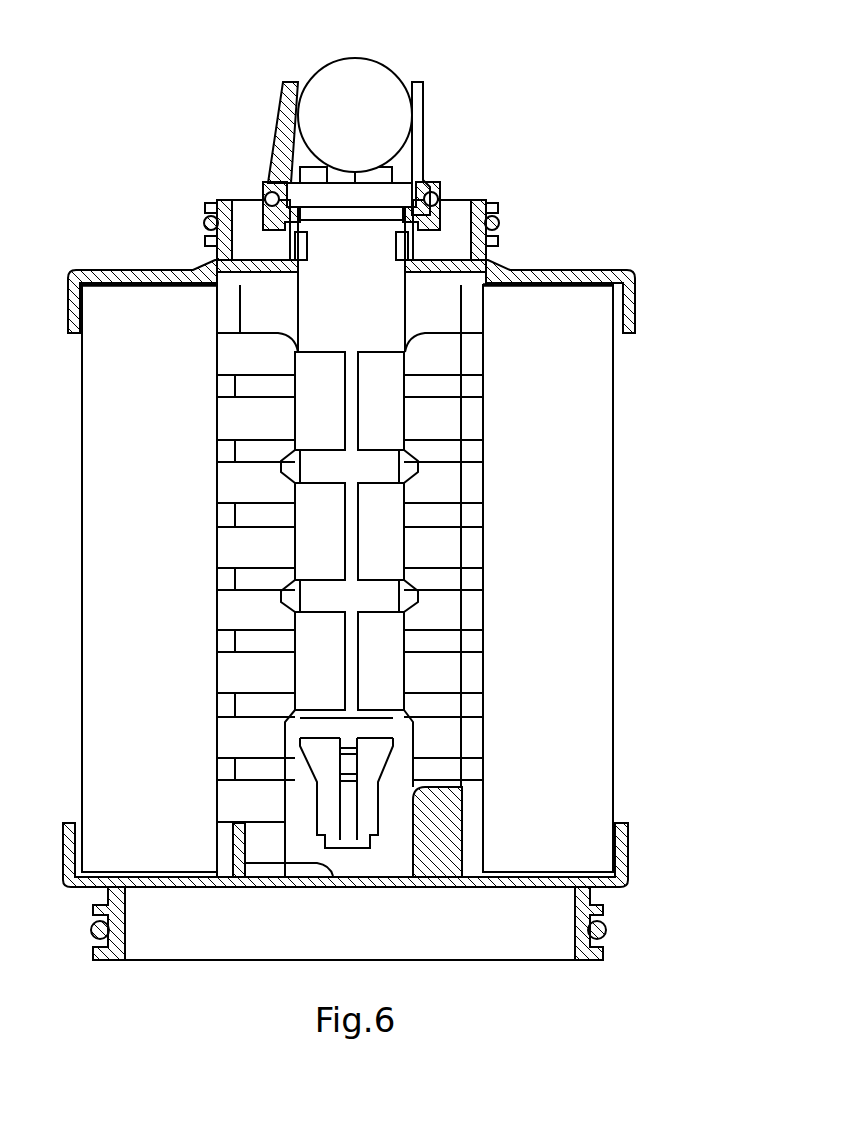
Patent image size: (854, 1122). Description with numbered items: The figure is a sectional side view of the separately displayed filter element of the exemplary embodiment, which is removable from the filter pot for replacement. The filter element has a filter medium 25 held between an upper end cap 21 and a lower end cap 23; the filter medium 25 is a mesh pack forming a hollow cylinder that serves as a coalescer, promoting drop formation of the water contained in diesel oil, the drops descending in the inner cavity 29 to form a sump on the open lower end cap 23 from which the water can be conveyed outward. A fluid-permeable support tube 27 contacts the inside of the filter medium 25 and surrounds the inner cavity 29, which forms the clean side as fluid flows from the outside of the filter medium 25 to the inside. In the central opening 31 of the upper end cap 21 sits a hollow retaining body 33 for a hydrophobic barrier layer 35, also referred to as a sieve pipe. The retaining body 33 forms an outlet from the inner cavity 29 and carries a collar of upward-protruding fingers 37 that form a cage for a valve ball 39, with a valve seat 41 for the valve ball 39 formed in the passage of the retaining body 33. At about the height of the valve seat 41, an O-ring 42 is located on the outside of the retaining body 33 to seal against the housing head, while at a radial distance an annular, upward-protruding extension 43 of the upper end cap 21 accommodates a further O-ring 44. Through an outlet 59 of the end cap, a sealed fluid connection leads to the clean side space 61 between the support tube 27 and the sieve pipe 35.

The upper end cap 21 is at (595, 273).
The lower end cap 23 is at (622, 882).
The filter medium 25 is at (573, 727).
The support tube 27 is at (470, 585).
The inner cavity 29 is at (390, 502).
The central opening 31 is at (420, 263).
The hollow retaining body 33 is at (305, 193).
The barrier layer 35 is at (388, 557).
The fingers 37 is at (428, 105).
The valve ball 39 is at (383, 85).
The valve seat 41 is at (335, 160).
The O-ring 42 is at (437, 193).
The extension 43 is at (500, 207).
The O-ring 44 is at (500, 222).
The outlet 59 is at (267, 268).
The clean side space 61 is at (437, 310).